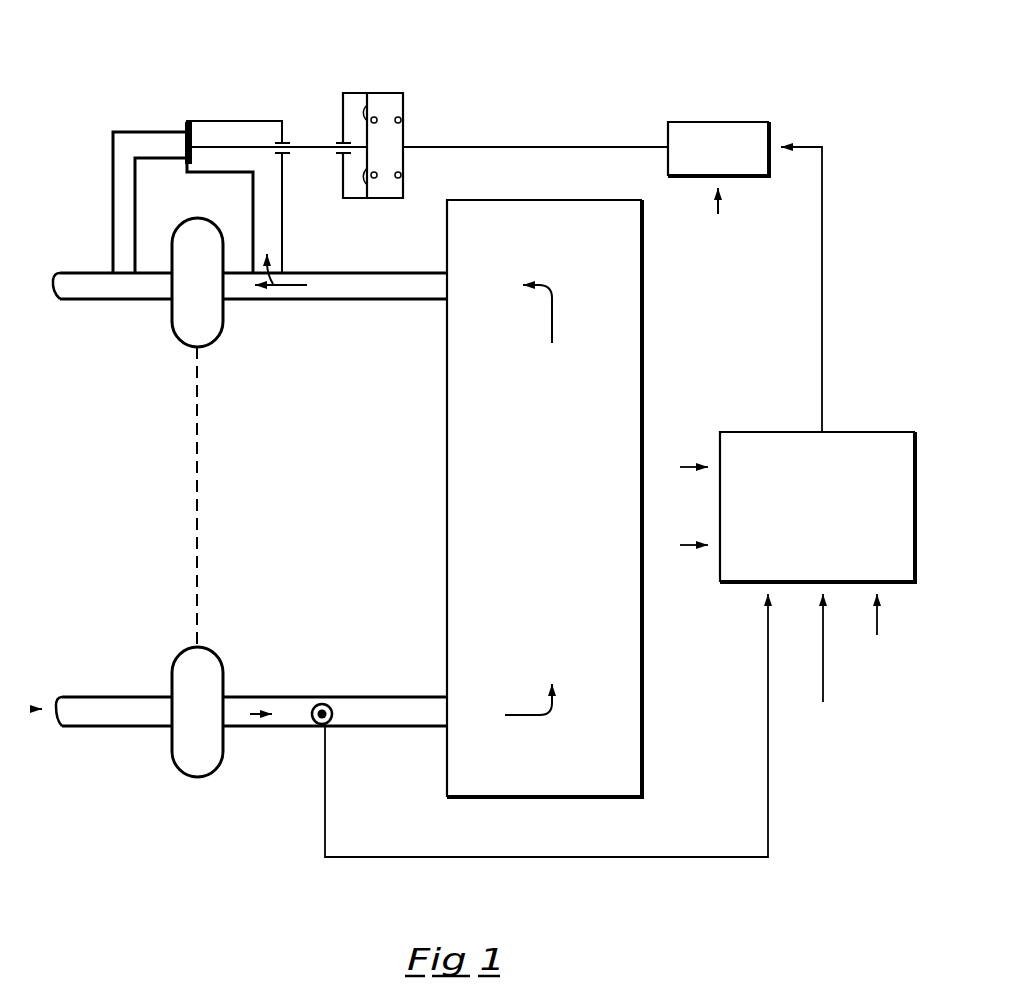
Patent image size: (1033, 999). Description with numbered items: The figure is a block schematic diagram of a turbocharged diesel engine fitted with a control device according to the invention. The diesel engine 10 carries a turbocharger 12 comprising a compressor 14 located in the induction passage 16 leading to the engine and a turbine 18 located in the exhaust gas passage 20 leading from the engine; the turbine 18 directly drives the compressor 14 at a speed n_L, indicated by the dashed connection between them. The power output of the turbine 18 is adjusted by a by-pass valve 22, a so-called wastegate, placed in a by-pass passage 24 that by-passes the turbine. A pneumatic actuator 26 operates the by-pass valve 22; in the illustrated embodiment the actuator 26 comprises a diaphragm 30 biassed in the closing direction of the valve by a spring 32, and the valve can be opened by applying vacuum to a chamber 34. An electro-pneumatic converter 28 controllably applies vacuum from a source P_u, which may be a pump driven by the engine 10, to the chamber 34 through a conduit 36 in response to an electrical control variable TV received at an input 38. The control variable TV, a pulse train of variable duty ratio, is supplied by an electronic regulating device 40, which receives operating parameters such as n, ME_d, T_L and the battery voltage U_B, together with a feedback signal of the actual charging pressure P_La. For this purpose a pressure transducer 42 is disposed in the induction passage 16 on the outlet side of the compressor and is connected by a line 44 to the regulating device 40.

The diesel engine 10 is at (447, 410).
The turbocharger 12 is at (182, 522).
The compressor 14 is at (221, 670).
The induction passage 16 is at (257, 697).
The turbine 18 is at (223, 325).
The exhaust gas passage 20 is at (150, 299).
The by-pass valve 22 is at (192, 140).
The by-pass passage 24 is at (282, 225).
The pneumatic actuator 26 is at (399, 119).
The electro-pneumatic converter 28 is at (752, 122).
The diaphragm 30 is at (370, 166).
The spring 32 is at (383, 175).
The chamber 34 is at (393, 140).
The conduit 36 is at (543, 147).
The input 38 is at (778, 147).
The electronic regulating device 40 is at (770, 432).
The pressure transducer 42 is at (332, 705).
The line 44 is at (610, 857).